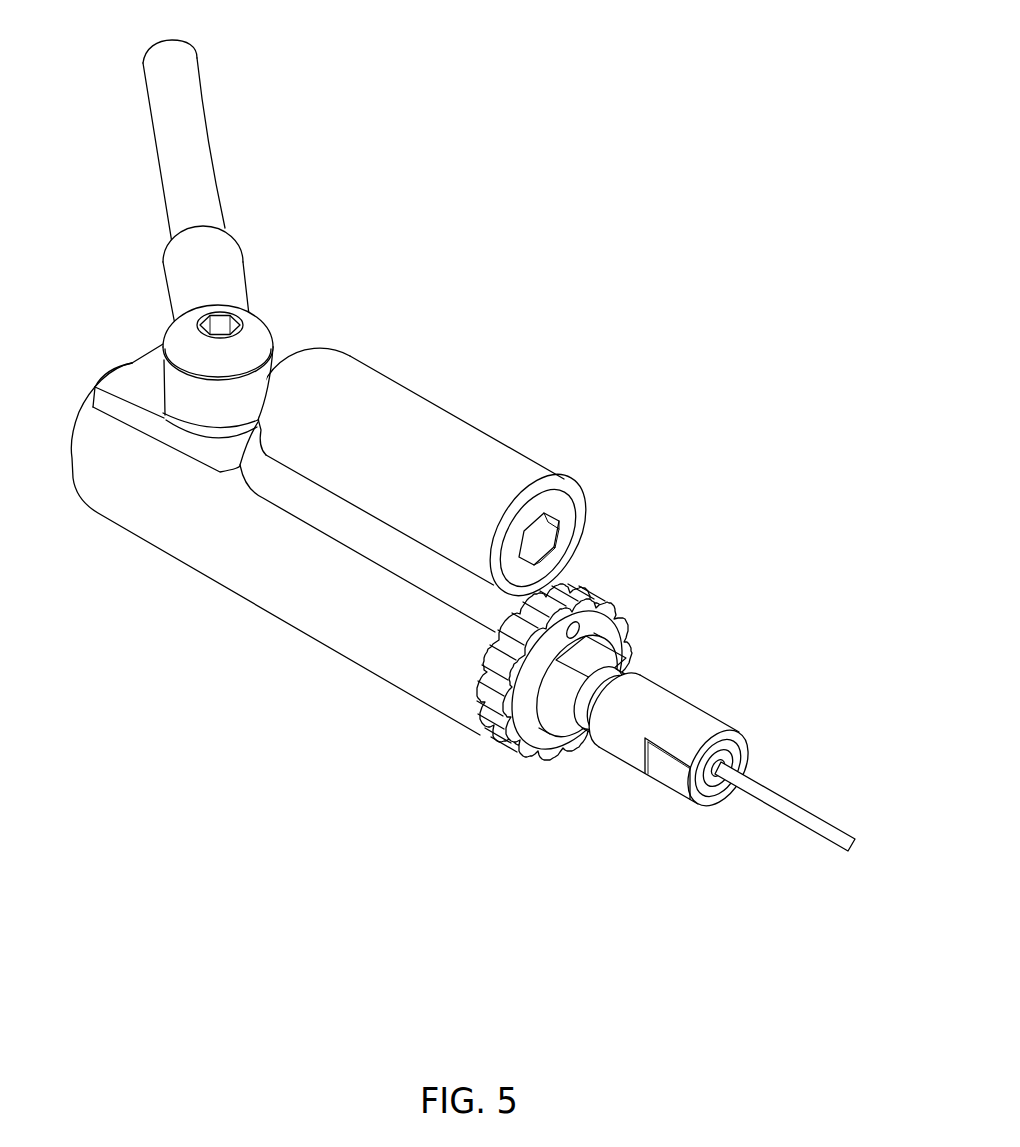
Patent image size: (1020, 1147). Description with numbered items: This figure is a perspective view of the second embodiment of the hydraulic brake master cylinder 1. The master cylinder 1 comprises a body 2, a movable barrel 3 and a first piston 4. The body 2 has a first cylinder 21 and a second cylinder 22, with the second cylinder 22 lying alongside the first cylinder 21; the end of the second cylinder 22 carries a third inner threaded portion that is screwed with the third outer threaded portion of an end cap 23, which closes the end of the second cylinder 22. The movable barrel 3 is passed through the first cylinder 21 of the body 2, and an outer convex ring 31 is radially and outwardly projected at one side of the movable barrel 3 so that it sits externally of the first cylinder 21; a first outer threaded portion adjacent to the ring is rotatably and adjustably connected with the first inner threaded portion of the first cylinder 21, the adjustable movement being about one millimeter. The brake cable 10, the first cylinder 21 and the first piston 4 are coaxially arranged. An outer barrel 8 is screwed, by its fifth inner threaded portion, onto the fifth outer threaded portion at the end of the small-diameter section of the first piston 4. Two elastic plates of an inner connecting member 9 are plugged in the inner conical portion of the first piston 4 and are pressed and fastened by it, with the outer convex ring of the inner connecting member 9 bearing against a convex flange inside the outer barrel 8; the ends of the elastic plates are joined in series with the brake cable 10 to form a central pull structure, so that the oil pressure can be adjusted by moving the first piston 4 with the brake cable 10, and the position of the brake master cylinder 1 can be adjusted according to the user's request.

The hydraulic brake master cylinder 1 is at (463, 476).
The body 2 is at (376, 389).
The first cylinder 21 is at (345, 658).
The second cylinder 22 is at (470, 461).
The end cap 23 is at (565, 502).
The movable barrel 3 is at (601, 641).
The outer convex ring 31 is at (618, 613).
The first piston 4 is at (572, 702).
The outer barrel 8 is at (695, 715).
The inner connecting member 9 is at (727, 748).
The brake cable 10 is at (784, 815).